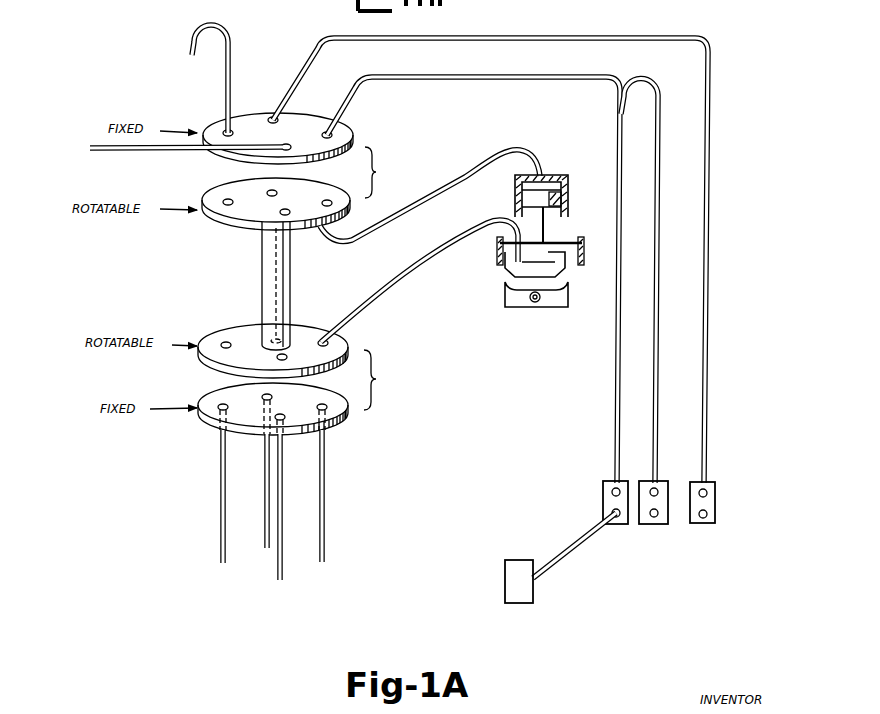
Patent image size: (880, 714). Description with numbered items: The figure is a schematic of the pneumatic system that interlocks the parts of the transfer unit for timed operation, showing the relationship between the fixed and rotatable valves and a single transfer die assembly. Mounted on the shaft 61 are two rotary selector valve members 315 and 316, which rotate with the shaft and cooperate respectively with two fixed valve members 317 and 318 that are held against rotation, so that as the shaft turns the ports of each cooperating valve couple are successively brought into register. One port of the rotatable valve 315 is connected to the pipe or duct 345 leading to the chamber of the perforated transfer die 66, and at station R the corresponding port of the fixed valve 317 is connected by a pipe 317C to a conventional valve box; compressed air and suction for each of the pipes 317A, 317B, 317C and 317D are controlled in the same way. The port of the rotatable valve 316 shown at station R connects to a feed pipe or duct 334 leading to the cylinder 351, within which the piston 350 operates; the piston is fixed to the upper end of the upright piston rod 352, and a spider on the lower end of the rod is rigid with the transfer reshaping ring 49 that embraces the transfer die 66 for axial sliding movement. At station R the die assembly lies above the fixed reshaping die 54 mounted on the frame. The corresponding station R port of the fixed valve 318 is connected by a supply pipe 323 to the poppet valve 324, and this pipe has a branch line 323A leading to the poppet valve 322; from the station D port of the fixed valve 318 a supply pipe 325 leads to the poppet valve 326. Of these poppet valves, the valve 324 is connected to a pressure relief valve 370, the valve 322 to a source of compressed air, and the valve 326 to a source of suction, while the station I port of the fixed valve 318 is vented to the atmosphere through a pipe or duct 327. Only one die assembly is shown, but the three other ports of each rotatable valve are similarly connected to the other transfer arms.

The fixed valve member 318 is at (208, 123).
The pipe or duct 327 is at (232, 43).
The supply pipe or duct 325 is at (596, 34).
The supply pipe or duct 323 is at (567, 82).
The branch line 323A is at (663, 123).
The rotary selector valve member 316 is at (228, 225).
The shaft 61 is at (292, 288).
The rotary selector valve member 315 is at (205, 328).
The pipe or duct 334 is at (500, 157).
The pipe or duct 345 is at (448, 243).
The piston 350 is at (568, 198).
The cylinder 351 is at (557, 178).
The piston rod 352 is at (547, 230).
The transfer reshaping ring 49 is at (585, 262).
The transfer die 66 is at (508, 268).
The fixed reshaping die 54 is at (518, 297).
The fixed valve member 317 is at (213, 423).
The pipe 317A is at (220, 510).
The pipe 317B is at (285, 483).
The pipe 317C is at (330, 513).
The pipe 317D is at (263, 543).
The poppet valve 324 is at (620, 525).
The poppet valve 322 is at (660, 525).
The poppet valve 326 is at (713, 525).
The pressure relief valve 370 is at (518, 598).